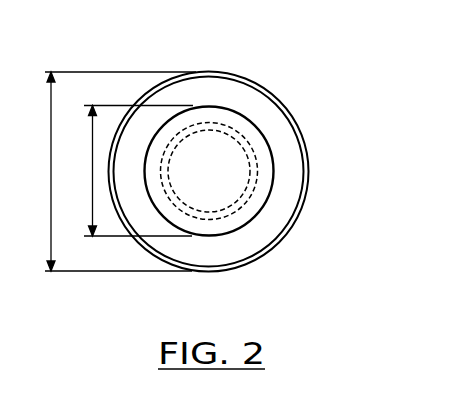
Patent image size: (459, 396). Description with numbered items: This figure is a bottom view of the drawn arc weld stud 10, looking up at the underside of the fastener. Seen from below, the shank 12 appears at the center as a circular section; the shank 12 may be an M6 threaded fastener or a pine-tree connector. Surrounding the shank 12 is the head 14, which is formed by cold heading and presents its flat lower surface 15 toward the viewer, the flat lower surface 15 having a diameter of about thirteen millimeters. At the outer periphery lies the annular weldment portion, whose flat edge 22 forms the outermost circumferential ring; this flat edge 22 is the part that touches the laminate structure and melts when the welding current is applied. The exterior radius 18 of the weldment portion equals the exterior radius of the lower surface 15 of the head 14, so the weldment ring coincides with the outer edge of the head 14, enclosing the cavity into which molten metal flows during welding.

The drawn arc weld stud 10 is at (238, 242).
The shank 12 is at (248, 212).
The head 14 is at (273, 164).
The flat lower surface 15 is at (138, 171).
The exterior radius 18 is at (118, 171).
The flat edge 22 is at (287, 137).